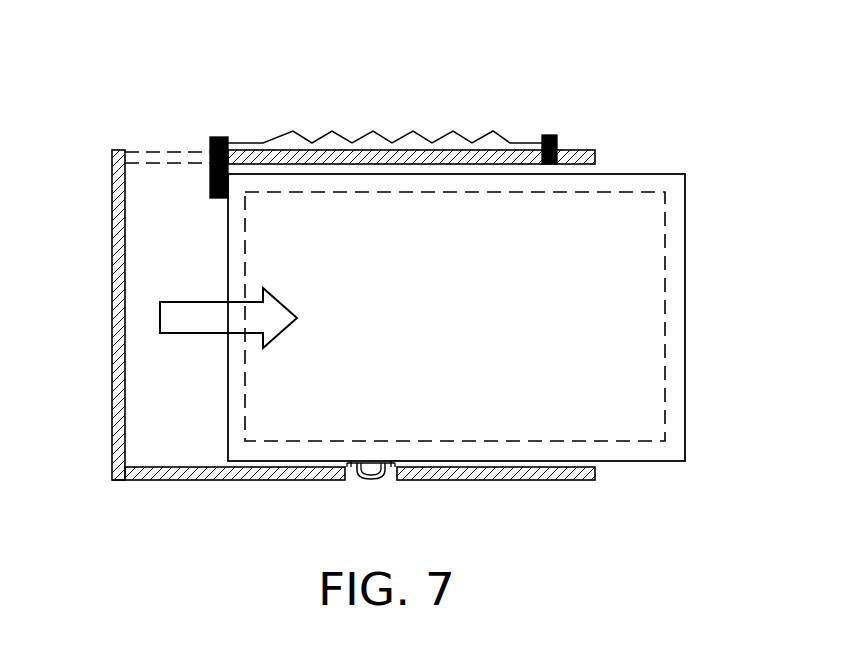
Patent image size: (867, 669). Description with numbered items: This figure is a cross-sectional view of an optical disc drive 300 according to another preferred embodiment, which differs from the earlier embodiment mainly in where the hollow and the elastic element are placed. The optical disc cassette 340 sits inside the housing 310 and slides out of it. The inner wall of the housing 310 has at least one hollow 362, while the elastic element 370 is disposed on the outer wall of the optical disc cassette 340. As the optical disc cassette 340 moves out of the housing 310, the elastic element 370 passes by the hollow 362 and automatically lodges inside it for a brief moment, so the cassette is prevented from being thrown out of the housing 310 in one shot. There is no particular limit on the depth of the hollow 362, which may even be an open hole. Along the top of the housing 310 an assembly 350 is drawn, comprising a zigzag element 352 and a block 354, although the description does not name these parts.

The optical disc drive 300 is at (649, 529).
The housing 310 is at (113, 315).
The optical disc cassette 340 is at (676, 333).
The sealing assembly 350 is at (310, 77).
The elastic element 352 is at (306, 140).
The sealing block 354 is at (218, 137).
The hollow 362 is at (354, 474).
The elastic element 370 is at (388, 467).